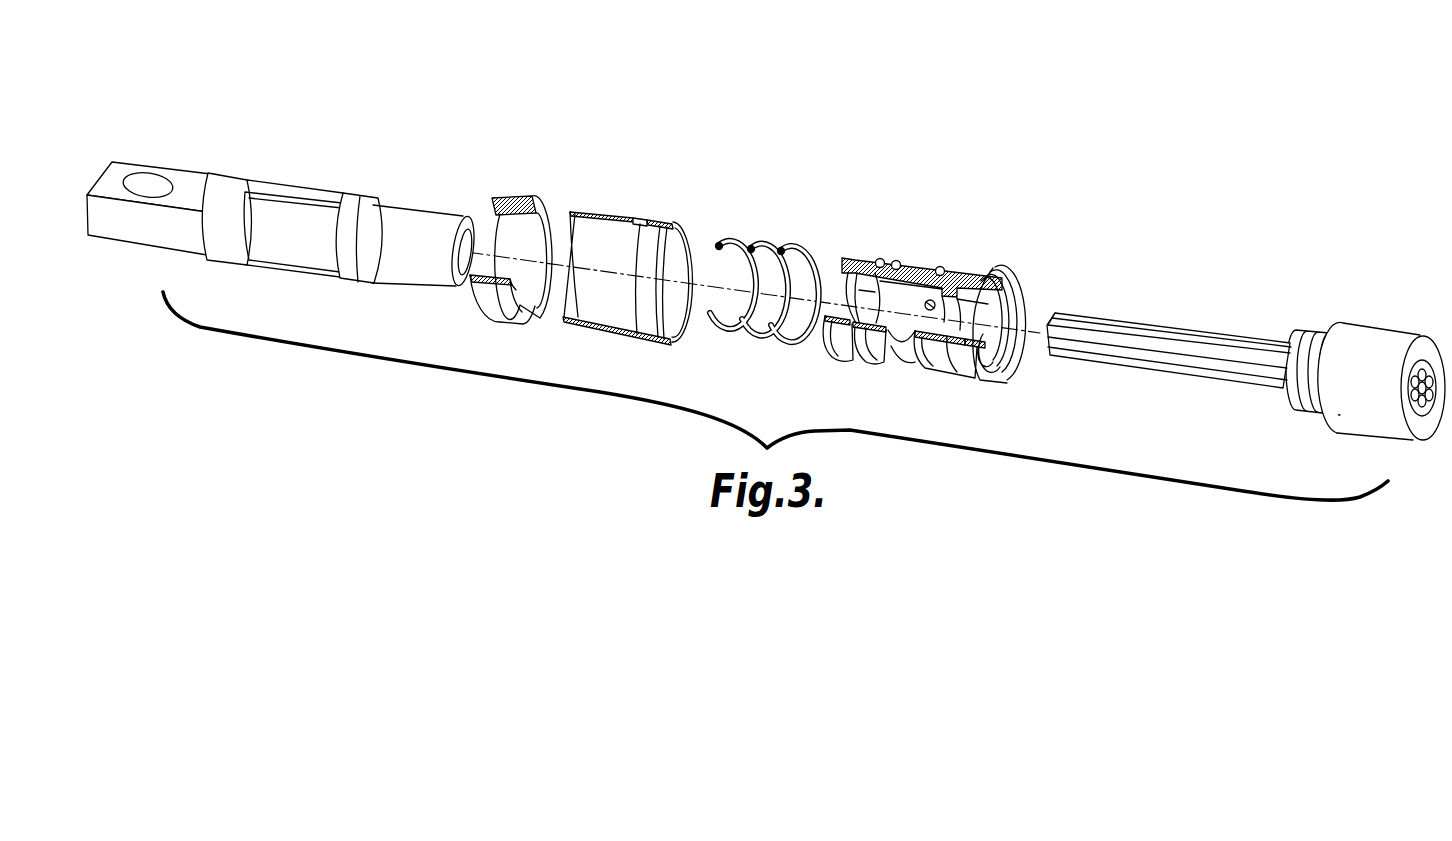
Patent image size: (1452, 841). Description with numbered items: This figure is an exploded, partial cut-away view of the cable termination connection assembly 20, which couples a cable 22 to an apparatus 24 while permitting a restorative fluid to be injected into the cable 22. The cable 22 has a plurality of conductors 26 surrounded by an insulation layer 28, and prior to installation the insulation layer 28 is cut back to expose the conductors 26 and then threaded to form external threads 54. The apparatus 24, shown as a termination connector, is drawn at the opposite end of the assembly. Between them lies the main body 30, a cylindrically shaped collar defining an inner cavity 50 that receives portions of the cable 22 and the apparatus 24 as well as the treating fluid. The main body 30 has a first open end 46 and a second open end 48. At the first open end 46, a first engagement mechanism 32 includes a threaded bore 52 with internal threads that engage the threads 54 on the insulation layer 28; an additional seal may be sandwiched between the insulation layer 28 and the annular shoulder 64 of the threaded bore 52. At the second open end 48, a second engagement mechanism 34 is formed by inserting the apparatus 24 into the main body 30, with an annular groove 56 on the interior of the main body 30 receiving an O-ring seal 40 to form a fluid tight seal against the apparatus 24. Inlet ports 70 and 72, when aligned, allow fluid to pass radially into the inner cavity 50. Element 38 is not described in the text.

The cable termination connection assembly 20 is at (867, 95).
The cable 22 is at (1381, 334).
The apparatus 24 is at (237, 153).
The conductors 26 is at (1192, 343).
The insulation layer 28 is at (1373, 333).
The main body 30 is at (889, 259).
The first engagement mechanism 32 is at (1031, 309).
The second engagement mechanism 34 is at (851, 289).
The housing flange 38 is at (861, 257).
The seal 40 is at (719, 244).
The first open end 46 is at (1022, 292).
The second open end 48 is at (863, 302).
The inner cavity 50 is at (848, 327).
The threaded bore 52 is at (995, 362).
The threads 54 is at (1295, 408).
The annular groove 56 is at (948, 356).
The annular shoulder 64 is at (959, 300).
The inlet port 70 is at (648, 216).
The inlet port 72 is at (900, 350).